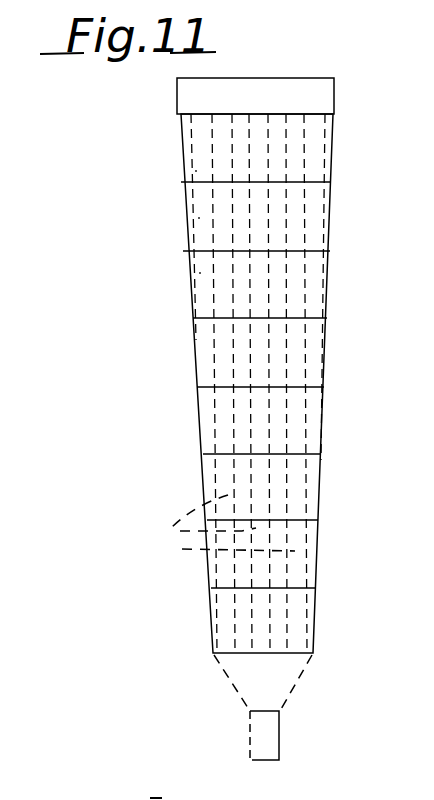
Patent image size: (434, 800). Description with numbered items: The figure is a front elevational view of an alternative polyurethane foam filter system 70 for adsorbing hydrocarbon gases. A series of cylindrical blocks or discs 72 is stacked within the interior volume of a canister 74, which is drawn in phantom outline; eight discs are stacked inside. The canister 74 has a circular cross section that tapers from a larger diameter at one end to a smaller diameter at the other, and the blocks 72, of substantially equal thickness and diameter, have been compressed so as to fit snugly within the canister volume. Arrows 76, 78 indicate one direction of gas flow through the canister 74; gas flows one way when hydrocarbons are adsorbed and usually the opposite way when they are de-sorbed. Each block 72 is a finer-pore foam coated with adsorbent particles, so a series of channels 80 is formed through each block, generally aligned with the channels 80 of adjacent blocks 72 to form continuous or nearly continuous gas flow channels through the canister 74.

The polyurethane foam filter system 70 is at (164, 150).
The cylindrical blocks or discs 72 is at (196, 172).
The canister 74 is at (336, 142).
The arrow 76 is at (255, 17).
The arrow 78 is at (263, 738).
The channels 80 is at (214, 535).